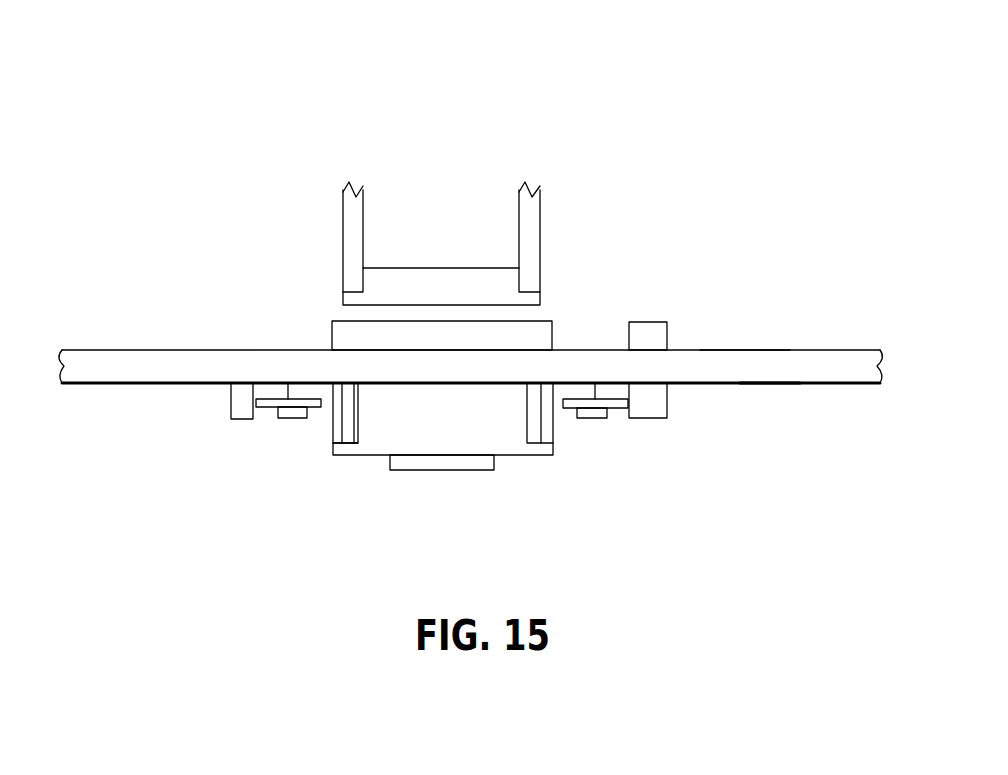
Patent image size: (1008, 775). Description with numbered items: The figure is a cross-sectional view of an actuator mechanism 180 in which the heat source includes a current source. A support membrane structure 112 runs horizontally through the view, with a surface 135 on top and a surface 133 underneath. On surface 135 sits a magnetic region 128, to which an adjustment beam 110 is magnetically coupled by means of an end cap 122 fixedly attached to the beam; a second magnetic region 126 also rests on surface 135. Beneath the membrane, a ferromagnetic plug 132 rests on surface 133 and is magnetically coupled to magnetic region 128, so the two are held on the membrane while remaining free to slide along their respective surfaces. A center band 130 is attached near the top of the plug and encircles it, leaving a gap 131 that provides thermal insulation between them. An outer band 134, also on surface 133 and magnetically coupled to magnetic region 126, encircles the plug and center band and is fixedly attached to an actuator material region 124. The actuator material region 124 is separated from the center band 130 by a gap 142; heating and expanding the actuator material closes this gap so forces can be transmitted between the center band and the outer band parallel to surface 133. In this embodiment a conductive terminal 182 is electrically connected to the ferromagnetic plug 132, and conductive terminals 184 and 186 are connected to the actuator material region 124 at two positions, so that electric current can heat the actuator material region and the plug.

The actuator mechanism 180 is at (183, 138).
The adjustment beam 110 is at (542, 210).
The support membrane structure 112 is at (830, 358).
The end cap 122 is at (467, 273).
The actuator material region 124 is at (288, 400).
The magnetic region 126 is at (653, 320).
The magnetic region 128 is at (347, 322).
The center band 130 is at (333, 443).
The gap 131 is at (357, 440).
The ferromagnetic plug 132 is at (467, 433).
The surface 133 is at (768, 385).
The outer band 134 is at (237, 420).
The surface 135 is at (745, 350).
The gap 142 is at (567, 427).
The conductive terminal 182 is at (455, 463).
The conductive terminal 184 is at (292, 420).
The conductive terminal 186 is at (592, 420).